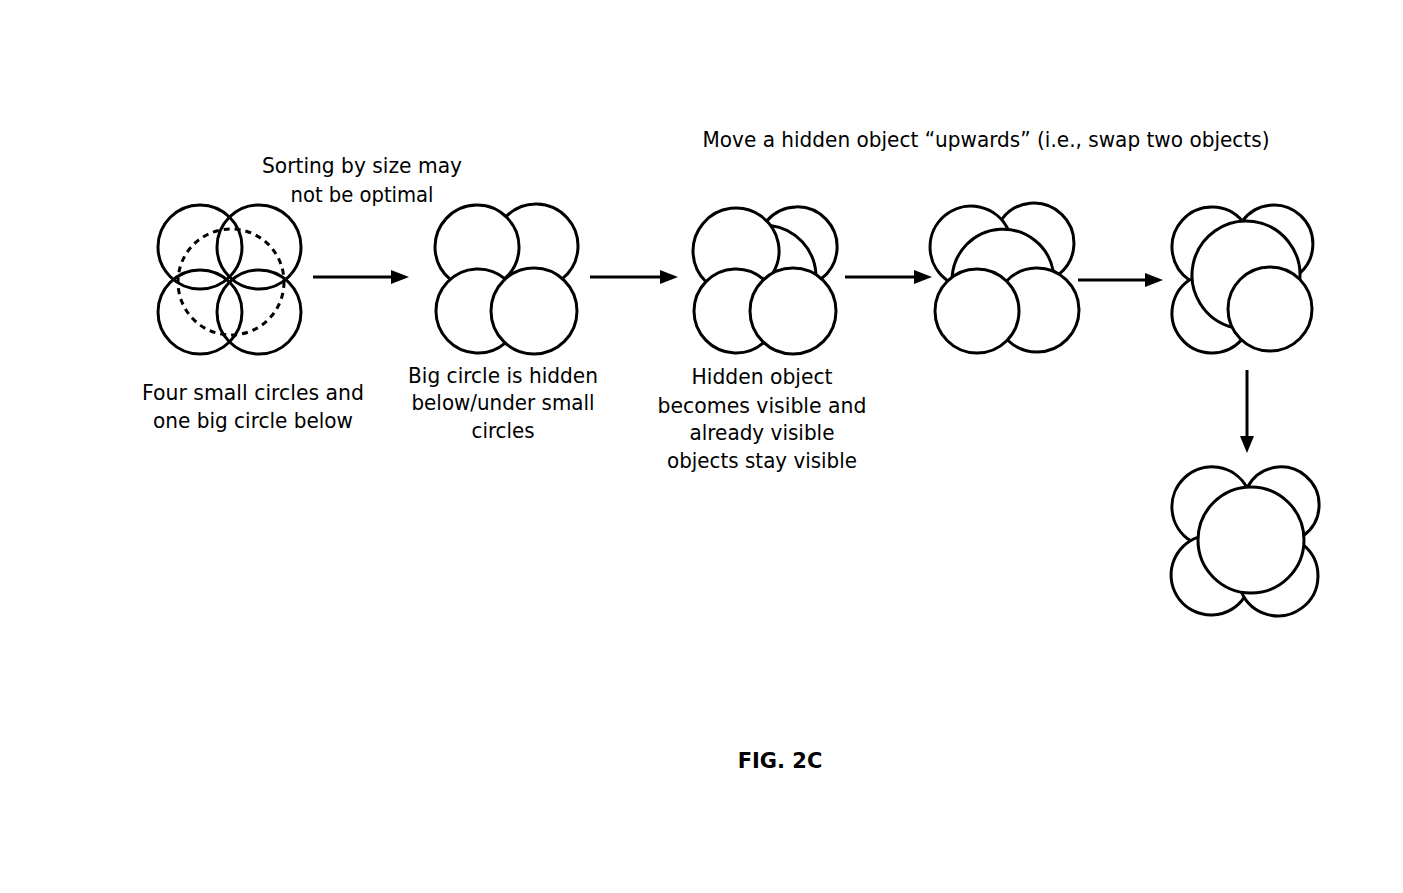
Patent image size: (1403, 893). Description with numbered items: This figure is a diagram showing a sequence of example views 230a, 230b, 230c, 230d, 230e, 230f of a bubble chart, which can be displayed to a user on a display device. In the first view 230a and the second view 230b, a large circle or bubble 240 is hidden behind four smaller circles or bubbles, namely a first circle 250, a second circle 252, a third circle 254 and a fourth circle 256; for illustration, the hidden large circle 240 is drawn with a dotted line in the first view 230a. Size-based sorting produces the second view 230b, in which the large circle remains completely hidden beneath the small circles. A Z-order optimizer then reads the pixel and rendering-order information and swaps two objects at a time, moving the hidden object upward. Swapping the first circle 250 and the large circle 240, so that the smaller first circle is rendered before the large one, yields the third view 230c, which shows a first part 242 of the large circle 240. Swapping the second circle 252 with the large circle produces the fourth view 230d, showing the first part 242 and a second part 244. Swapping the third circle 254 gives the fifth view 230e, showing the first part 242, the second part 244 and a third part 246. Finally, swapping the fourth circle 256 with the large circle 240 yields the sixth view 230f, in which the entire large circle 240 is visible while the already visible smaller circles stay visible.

The first view 230a is at (227, 98).
The second view 230b is at (505, 206).
The third view 230c is at (762, 201).
The fourth view 230d is at (1002, 206).
The fifth view 230e is at (1243, 206).
The sixth view 230f is at (1246, 642).
The large circle 240 is at (205, 237).
The first part 242 is at (790, 231).
The second part 244 is at (975, 237).
The third part 246 is at (1200, 313).
The first circle 250 is at (299, 254).
The second circle 252 is at (166, 226).
The third circle 254 is at (166, 332).
The fourth circle 256 is at (290, 338).